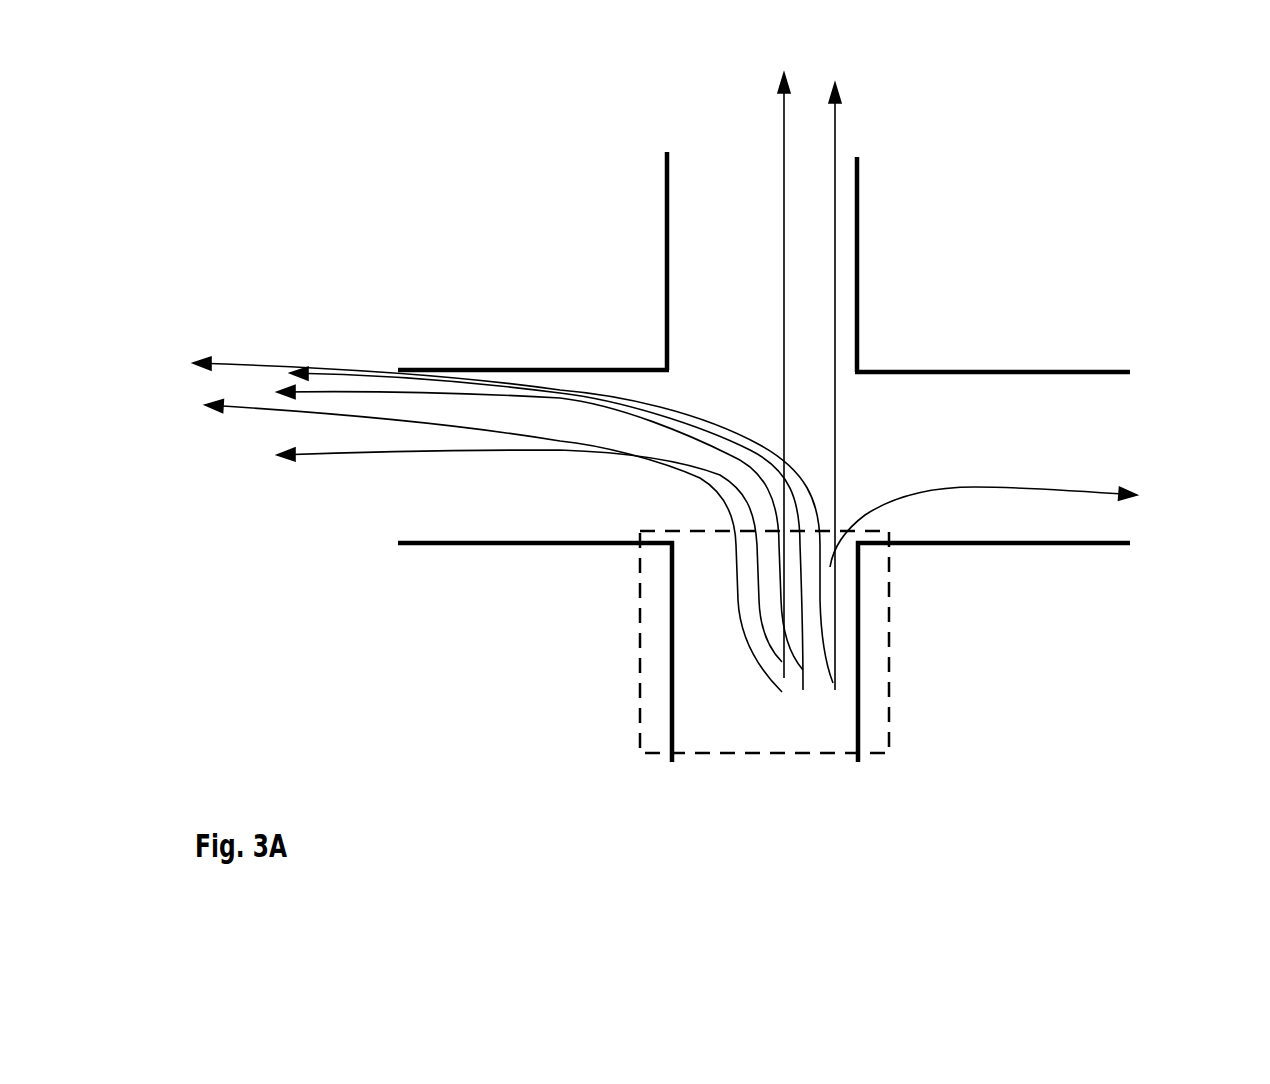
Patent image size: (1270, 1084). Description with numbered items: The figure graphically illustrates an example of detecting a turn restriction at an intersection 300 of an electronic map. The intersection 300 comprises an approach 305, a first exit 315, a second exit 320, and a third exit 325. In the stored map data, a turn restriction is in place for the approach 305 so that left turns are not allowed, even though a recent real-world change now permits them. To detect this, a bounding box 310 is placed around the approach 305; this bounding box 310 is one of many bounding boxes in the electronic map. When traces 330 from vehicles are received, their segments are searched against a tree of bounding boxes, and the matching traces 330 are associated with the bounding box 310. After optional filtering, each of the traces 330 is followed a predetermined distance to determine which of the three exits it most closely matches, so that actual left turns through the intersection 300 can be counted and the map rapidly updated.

The intersection 300 is at (753, 494).
The approach 305 is at (799, 808).
The bounding box 310 is at (888, 643).
The first exit 315 is at (363, 547).
The second exit 320 is at (642, 140).
The third exit 325 is at (1143, 408).
The traces 330 is at (720, 620).